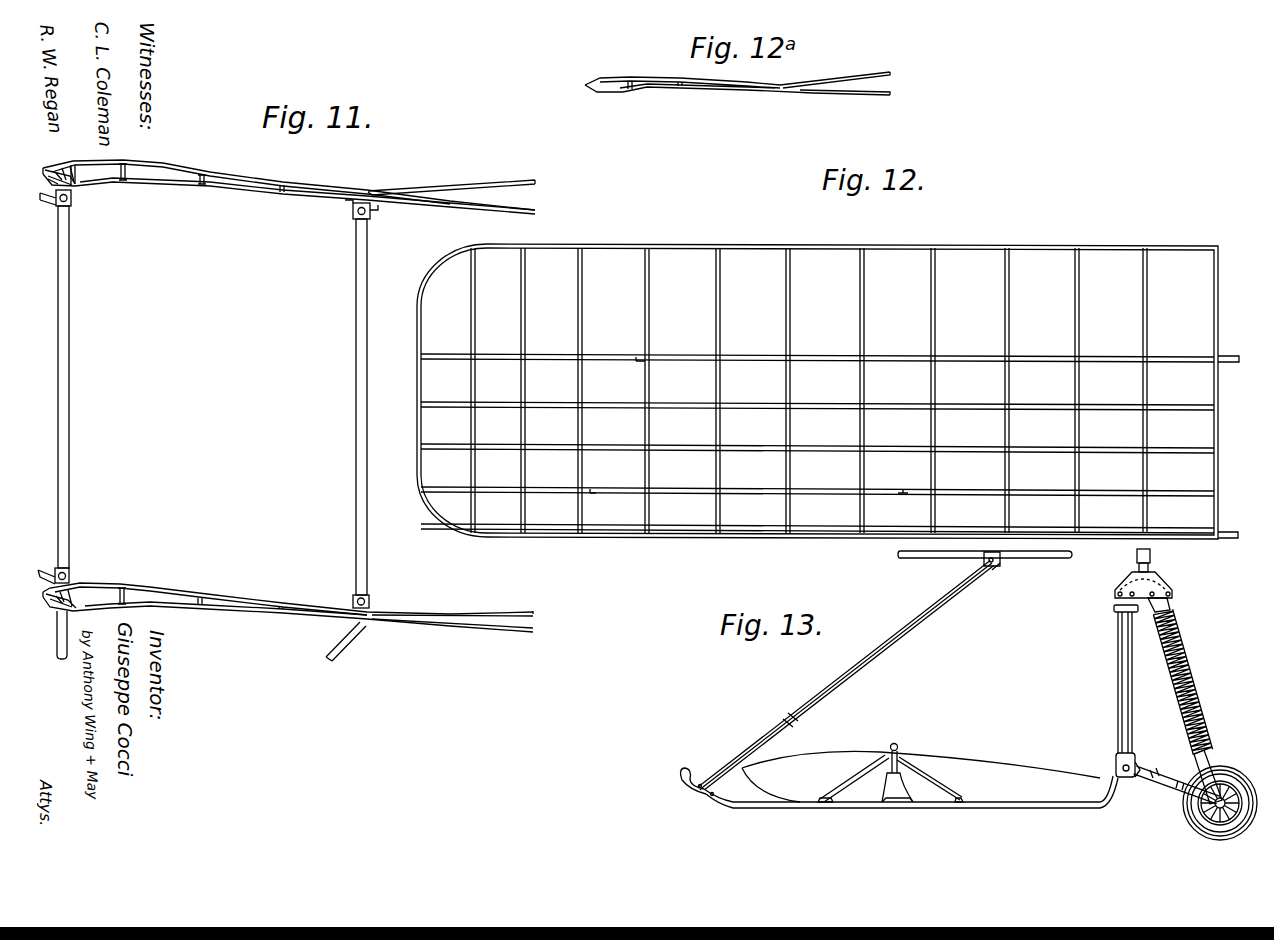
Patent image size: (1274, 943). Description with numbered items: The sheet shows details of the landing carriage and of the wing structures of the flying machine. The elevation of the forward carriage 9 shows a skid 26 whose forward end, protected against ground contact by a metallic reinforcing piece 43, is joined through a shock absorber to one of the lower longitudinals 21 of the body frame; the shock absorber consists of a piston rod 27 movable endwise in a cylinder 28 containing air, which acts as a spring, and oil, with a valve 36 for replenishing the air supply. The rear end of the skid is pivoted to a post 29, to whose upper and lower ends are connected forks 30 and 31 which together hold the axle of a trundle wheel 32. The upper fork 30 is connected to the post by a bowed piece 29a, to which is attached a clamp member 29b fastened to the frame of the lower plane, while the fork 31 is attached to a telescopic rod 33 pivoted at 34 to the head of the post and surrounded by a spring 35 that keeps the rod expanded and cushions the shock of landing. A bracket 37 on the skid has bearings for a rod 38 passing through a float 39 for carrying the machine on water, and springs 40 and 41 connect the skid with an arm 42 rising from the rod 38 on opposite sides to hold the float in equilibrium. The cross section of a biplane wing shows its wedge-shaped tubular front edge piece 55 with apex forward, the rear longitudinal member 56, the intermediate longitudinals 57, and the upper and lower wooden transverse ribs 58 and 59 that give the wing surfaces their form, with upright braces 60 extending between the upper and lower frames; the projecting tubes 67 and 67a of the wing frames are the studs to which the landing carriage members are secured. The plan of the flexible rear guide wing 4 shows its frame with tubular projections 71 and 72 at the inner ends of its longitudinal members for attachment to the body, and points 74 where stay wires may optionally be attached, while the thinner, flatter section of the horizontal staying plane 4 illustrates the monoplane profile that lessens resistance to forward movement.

In FIG. 12A, the horizontal guiding monoplane wing 4 is at (790, 94).
In FIG. 12, the horizontal guiding monoplane wing 4 is at (826, 262).
In FIG. 13, the forward carriage 9 is at (952, 655).
In FIG. 13, the lower longitudinal 21 is at (1052, 561).
In FIG. 13, the skid 26 is at (727, 810).
In FIG. 13, the piston rod 27 is at (738, 747).
In FIG. 13, the cylinder 28 is at (878, 640).
In FIG. 13, the post 29 is at (1118, 678).
In FIG. 13, the bowed piece 29a is at (1114, 607).
In FIG. 13, the clamp member 29b is at (1132, 572).
In FIG. 13, the upper fork 30 is at (1215, 758).
In FIG. 13, the lower fork 31 is at (1175, 790).
In FIG. 13, the trundle wheel 32 is at (1190, 822).
In FIG. 13, the telescopic rod 33 is at (1168, 658).
In FIG. 13, the pivot 34 is at (1160, 595).
In FIG. 13, the spring 35 is at (1182, 662).
In FIG. 13, the valve 36 is at (975, 573).
In FIG. 13, the bracket 37 is at (948, 756).
In FIG. 13, the rod 38 is at (892, 744).
In FIG. 13, the float 39 is at (1058, 772).
In FIG. 13, the spring 40 is at (855, 772).
In FIG. 13, the spring 41 is at (958, 768).
In FIG. 13, the arm 42 is at (900, 772).
In FIG. 13, the metallic reinforcing piece 43 is at (690, 794).
In FIG. 11, the front edge piece 55 is at (80, 190).
In FIG. 11, the rear longitudinal member 56 is at (378, 192).
In FIG. 11, the intermediate longitudinal 57 is at (195, 185).
In FIG. 11, the upper transverse rib 58 is at (262, 178).
In FIG. 11, the lower transverse rib 59 is at (247, 185).
In FIG. 11, the upright brace 60 is at (69, 373).
In FIG. 11, the tube 67 is at (57, 630).
In FIG. 13, the tube 67 is at (1150, 562).
In FIG. 11, the tube 67a is at (335, 655).
In FIG. 12, the tubular projection 71 is at (1228, 531).
In FIG. 12, the tubular projection 72 is at (1230, 364).
In FIG. 12, the stay wire attachment means 74 is at (640, 354).